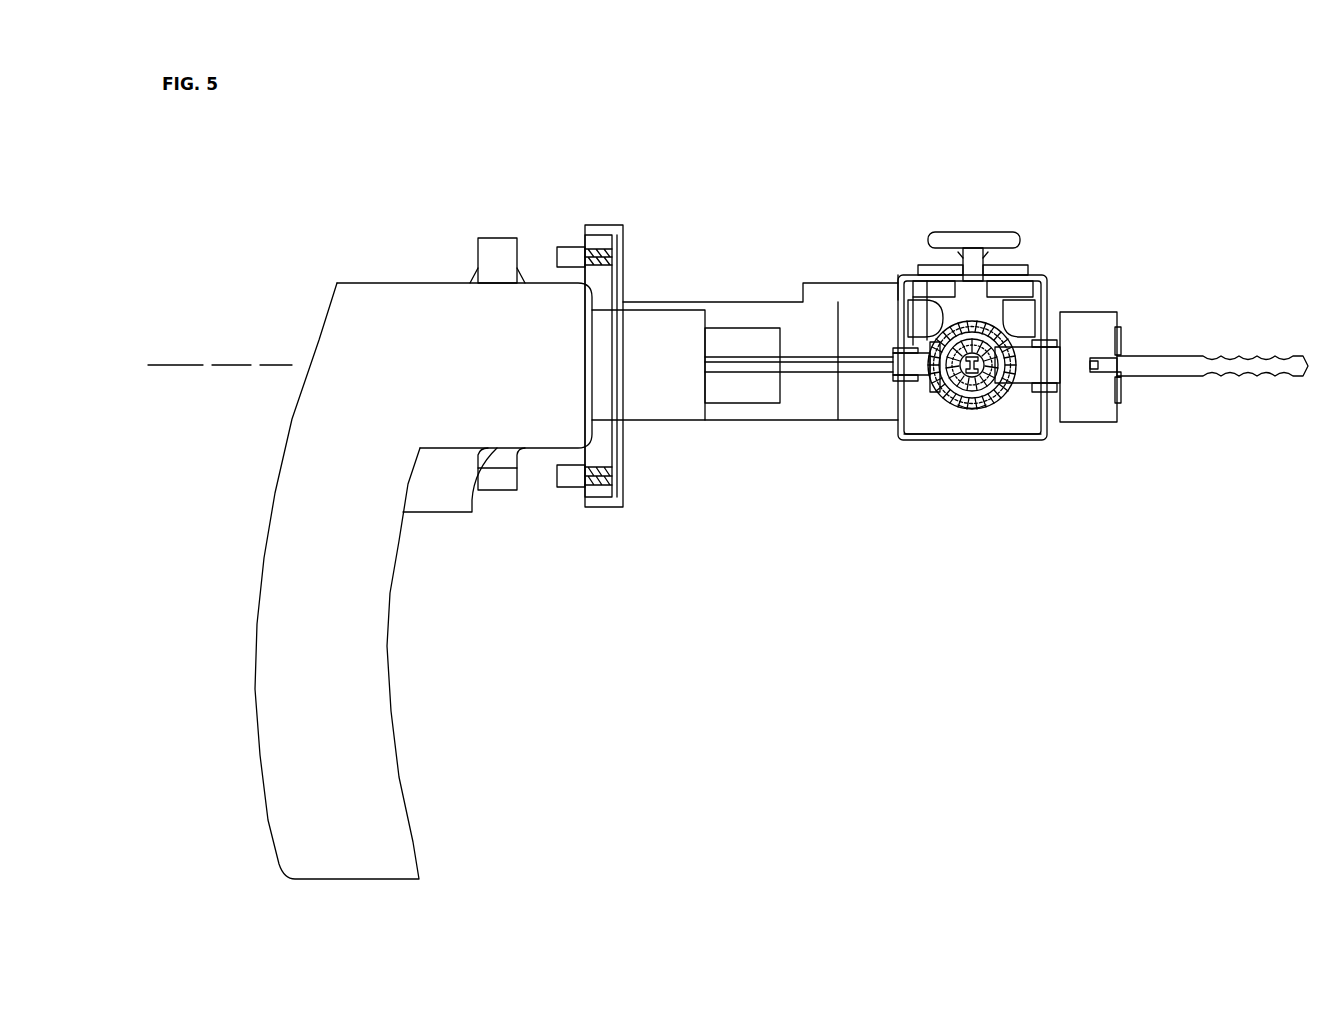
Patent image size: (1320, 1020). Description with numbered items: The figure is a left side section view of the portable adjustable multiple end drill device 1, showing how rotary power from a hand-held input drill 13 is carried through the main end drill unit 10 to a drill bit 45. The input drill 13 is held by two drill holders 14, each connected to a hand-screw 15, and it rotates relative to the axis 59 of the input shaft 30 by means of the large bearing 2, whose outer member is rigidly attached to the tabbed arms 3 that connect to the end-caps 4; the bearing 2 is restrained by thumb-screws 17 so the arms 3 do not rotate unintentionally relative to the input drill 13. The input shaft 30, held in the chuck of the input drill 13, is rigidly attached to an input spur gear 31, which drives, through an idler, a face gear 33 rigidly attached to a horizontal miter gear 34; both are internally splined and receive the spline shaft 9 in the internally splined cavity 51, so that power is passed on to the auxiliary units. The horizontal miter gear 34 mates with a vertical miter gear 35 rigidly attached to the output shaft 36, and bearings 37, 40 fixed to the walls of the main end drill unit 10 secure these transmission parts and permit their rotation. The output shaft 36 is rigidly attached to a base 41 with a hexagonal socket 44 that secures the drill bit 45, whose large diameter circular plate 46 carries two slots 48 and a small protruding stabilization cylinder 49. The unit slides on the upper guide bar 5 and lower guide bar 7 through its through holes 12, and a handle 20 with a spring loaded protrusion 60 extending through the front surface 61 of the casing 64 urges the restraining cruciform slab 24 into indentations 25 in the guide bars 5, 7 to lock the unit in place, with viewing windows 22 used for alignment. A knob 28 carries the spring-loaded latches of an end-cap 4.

The portable adjustable multiple end drill device 1 is at (528, 341).
The large bearing 2 is at (618, 233).
The tabbed arms 3 is at (768, 410).
The end-caps 4 is at (855, 307).
The upper guide bar 5 is at (922, 328).
The lower guide bar 7 is at (1025, 322).
The spline shaft 9 is at (973, 400).
The main end drill unit 10 is at (1043, 280).
The through holes 12 is at (1003, 313).
The input drill 13 is at (349, 602).
The drill holders 14 is at (502, 480).
The hand-screws 15 is at (476, 278).
The thumb-screws 17 is at (564, 254).
The handle 20 is at (993, 238).
The viewing windows 22 is at (905, 300).
The restraining cruciform slab 24 is at (1020, 290).
The indentations 25 is at (1007, 307).
The knob 28 is at (958, 257).
The input shaft 30 is at (798, 367).
The input spur gear 31 is at (930, 400).
The face gear 33 is at (955, 410).
The miter gear 34 is at (967, 410).
The vertical miter gear 35 is at (990, 412).
The output shaft 36 is at (1053, 400).
The bearing 37 is at (893, 398).
The bearing 40 is at (1035, 390).
The base 41 is at (1080, 412).
The hexagonal socket 44 is at (1093, 358).
The drill bit 45 is at (1185, 370).
The large diameter circular plate 46 is at (1120, 385).
The slots 48 is at (1121, 330).
The stabilization cylinder 49 is at (1100, 370).
The internally splined cavity 51 is at (978, 400).
The axis 59 is at (168, 366).
The spring loaded protrusion 60 is at (973, 265).
The front surface 61 is at (907, 273).
The casing 64 is at (912, 437).